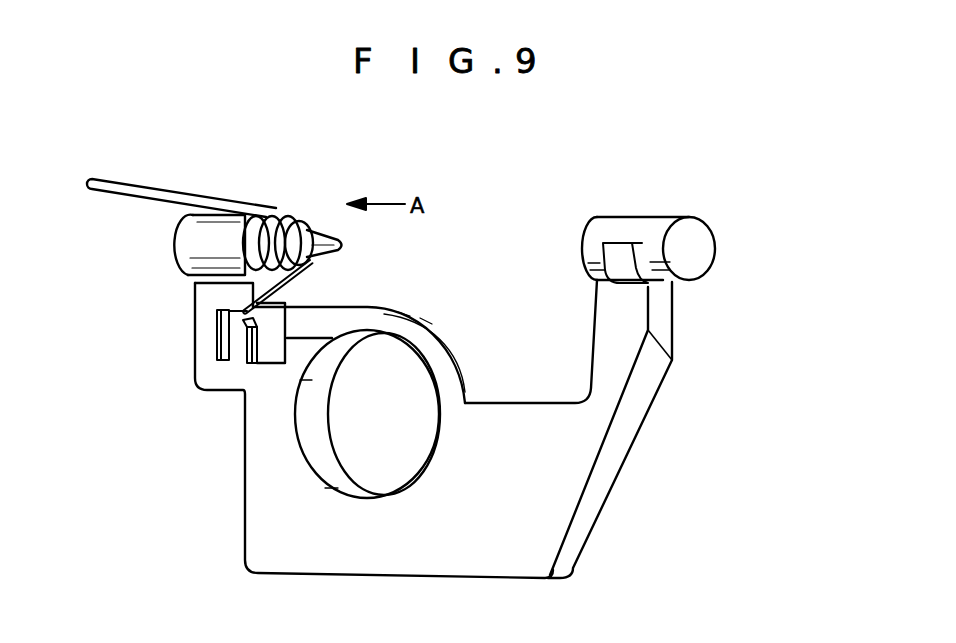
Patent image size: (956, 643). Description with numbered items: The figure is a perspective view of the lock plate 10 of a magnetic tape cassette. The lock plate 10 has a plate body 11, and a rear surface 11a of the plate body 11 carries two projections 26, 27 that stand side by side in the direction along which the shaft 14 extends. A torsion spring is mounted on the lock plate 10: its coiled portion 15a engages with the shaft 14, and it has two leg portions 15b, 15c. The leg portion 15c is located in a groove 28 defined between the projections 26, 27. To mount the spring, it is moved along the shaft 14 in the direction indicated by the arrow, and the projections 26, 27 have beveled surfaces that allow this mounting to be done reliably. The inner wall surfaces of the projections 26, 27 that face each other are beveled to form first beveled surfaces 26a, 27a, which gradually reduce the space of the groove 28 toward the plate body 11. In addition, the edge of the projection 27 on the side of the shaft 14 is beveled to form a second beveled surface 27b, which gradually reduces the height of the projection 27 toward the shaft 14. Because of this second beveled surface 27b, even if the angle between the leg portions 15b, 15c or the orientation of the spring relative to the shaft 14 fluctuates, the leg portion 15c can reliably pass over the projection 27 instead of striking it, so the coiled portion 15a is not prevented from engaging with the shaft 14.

The lock plate 10 is at (708, 401).
The plate body 11 is at (604, 502).
The rear surface 11a is at (497, 428).
The shaft 14 is at (307, 227).
The coiled portion 15a is at (286, 216).
The leg portion 15b is at (166, 183).
The leg portion 15c is at (300, 280).
The projection 26 is at (217, 343).
The first beveled surface 26a is at (213, 320).
The projection 27 is at (268, 367).
The first beveled surface 27a is at (338, 352).
The second beveled surface 27b is at (280, 300).
The groove 28 is at (200, 383).